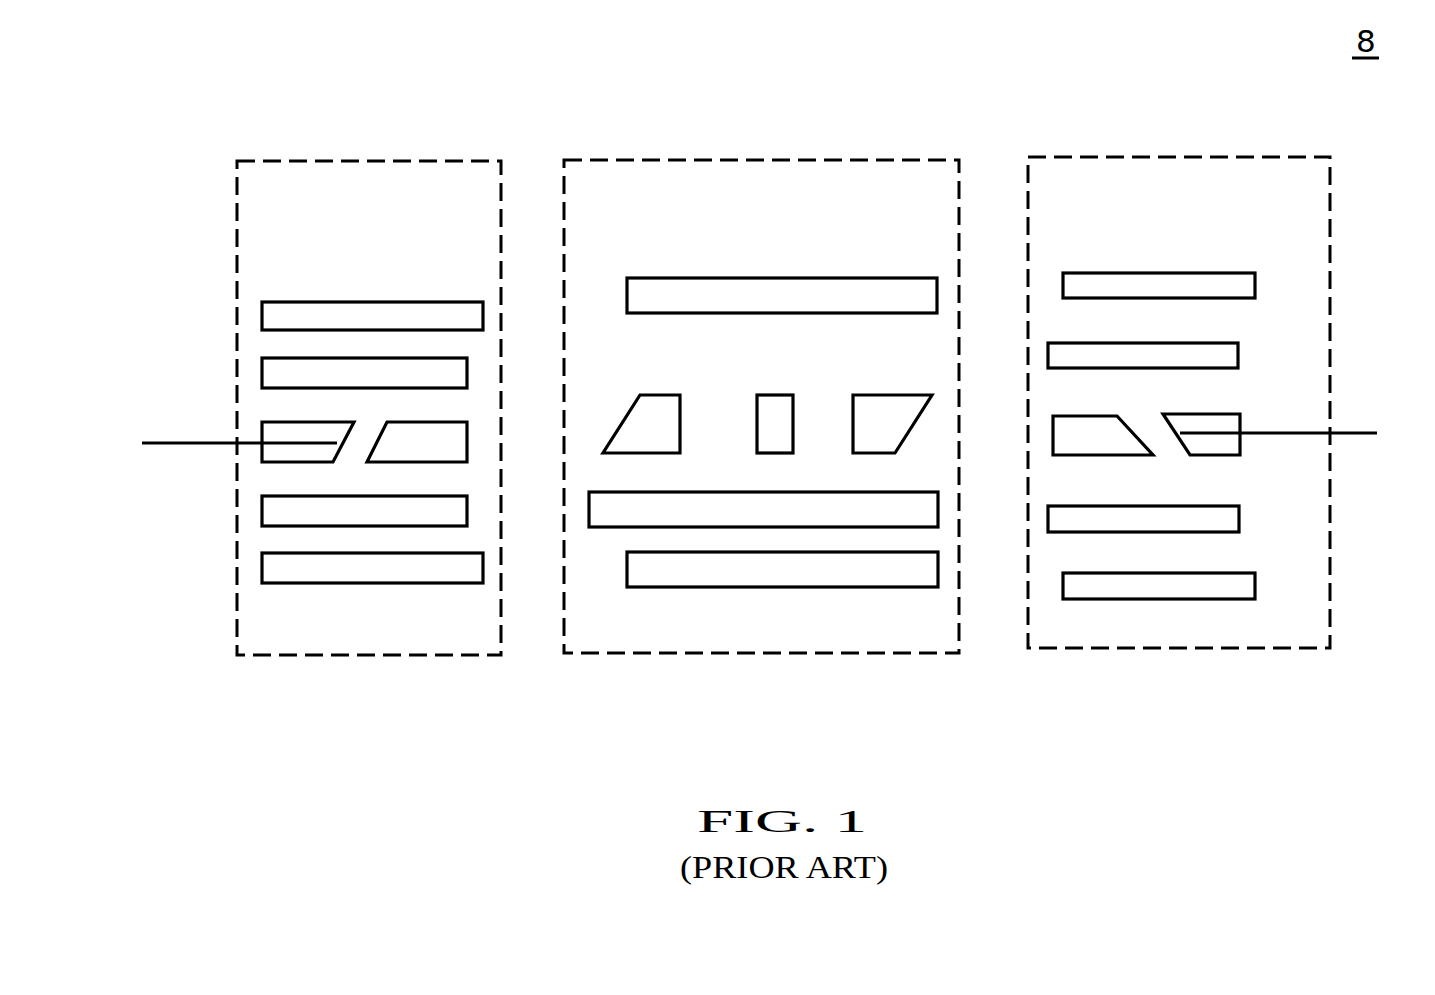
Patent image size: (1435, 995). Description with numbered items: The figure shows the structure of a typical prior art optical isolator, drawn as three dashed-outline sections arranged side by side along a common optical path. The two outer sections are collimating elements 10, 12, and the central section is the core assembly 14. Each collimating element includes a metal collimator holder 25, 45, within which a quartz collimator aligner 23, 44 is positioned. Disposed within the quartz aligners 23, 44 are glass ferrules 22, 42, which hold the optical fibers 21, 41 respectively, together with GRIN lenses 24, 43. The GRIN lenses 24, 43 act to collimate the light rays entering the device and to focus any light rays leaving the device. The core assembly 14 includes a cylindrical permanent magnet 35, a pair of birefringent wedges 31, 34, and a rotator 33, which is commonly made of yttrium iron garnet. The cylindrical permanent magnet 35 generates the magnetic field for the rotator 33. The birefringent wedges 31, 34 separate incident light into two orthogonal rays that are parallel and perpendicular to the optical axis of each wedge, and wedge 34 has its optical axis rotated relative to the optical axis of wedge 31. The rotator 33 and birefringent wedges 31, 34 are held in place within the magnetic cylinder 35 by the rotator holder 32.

The collimating element 10 is at (1155, 157).
The collimating element 12 is at (360, 161).
The core assembly 14 is at (758, 160).
The optical fiber 21 is at (168, 443).
The glass ferrule 22 is at (277, 422).
The quartz collimator aligner 23 is at (262, 372).
The GRIN lens 24 is at (458, 422).
The metal collimator holder 25 is at (367, 302).
The birefringent wedge 31 is at (662, 395).
The rotator holder 32 is at (913, 492).
The rotator 33 is at (773, 395).
The birefringent wedge 34 is at (880, 395).
The cylindrical permanent magnet 35 is at (749, 278).
The optical fiber 41 is at (1353, 433).
The glass ferrule 42 is at (1230, 414).
The GRIN lens 43 is at (1080, 455).
The quartz collimator aligner 44 is at (1230, 343).
The metal collimator holder 45 is at (1150, 273).